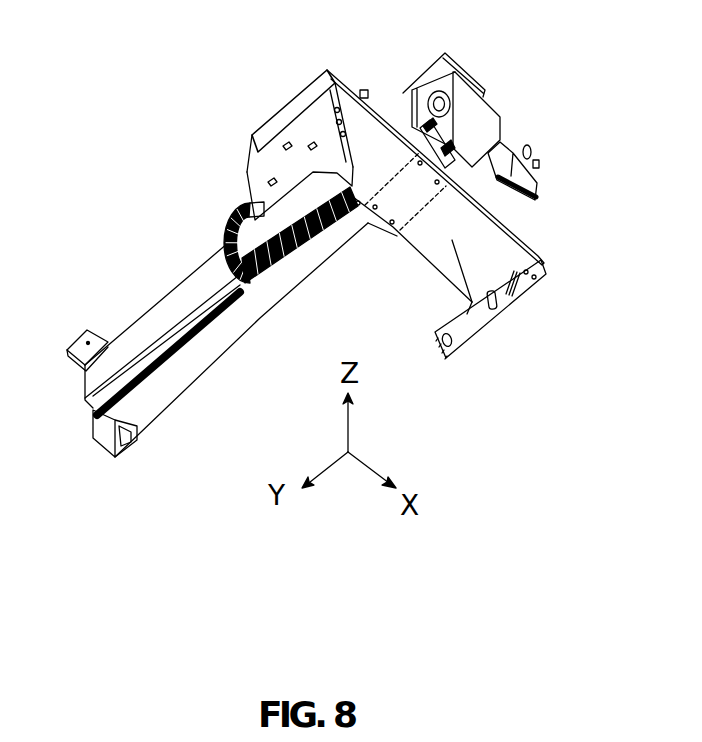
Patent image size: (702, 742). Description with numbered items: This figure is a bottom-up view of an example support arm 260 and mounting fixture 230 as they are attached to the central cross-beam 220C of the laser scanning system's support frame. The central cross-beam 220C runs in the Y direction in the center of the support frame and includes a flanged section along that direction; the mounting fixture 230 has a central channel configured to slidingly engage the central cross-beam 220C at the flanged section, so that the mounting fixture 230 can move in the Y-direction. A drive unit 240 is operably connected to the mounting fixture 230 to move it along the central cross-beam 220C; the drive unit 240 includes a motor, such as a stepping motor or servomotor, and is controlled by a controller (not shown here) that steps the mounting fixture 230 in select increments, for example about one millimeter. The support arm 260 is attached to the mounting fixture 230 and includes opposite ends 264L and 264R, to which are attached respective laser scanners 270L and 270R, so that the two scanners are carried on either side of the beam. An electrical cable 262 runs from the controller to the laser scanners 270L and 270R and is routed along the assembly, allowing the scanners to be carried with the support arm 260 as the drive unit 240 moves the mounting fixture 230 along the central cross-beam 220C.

The central cross-beam 220C is at (180, 293).
The electrical cable 262 is at (230, 244).
The left end of the support arm 264L is at (297, 99).
The left laser scanner 270L is at (280, 163).
The mounting fixture 230 is at (420, 194).
The support arm 260 is at (452, 242).
The drive unit 240 is at (512, 115).
The right end of the support arm 264R is at (545, 263).
The right laser scanner 270R is at (472, 320).